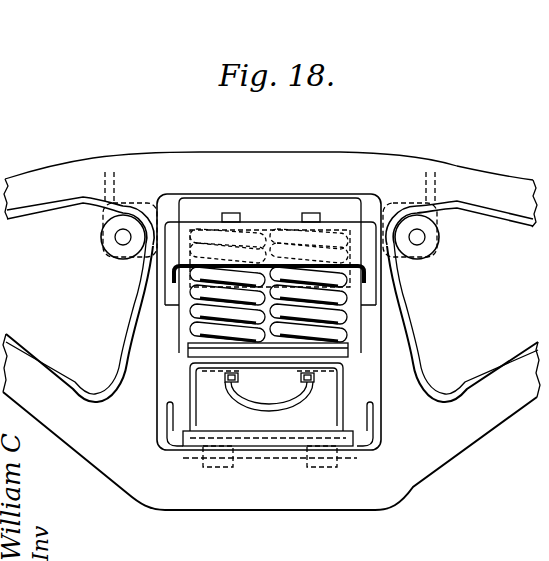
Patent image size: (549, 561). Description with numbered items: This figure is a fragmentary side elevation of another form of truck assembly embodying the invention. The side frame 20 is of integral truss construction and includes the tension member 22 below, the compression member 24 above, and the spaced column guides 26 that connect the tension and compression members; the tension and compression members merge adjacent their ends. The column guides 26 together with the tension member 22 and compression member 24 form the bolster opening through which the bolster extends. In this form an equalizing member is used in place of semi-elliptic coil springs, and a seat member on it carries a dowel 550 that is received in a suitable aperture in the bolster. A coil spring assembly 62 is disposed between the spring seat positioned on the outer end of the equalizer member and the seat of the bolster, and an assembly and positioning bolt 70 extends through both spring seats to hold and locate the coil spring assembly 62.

The side frame 20 is at (360, 163).
The compression member 24 is at (163, 165).
The tension member 22 is at (140, 493).
The column guides 26 is at (383, 300).
The coil spring assembly 62 is at (342, 300).
The assembly and positioning bolt 70 is at (308, 213).
The dowel 550 is at (240, 377).